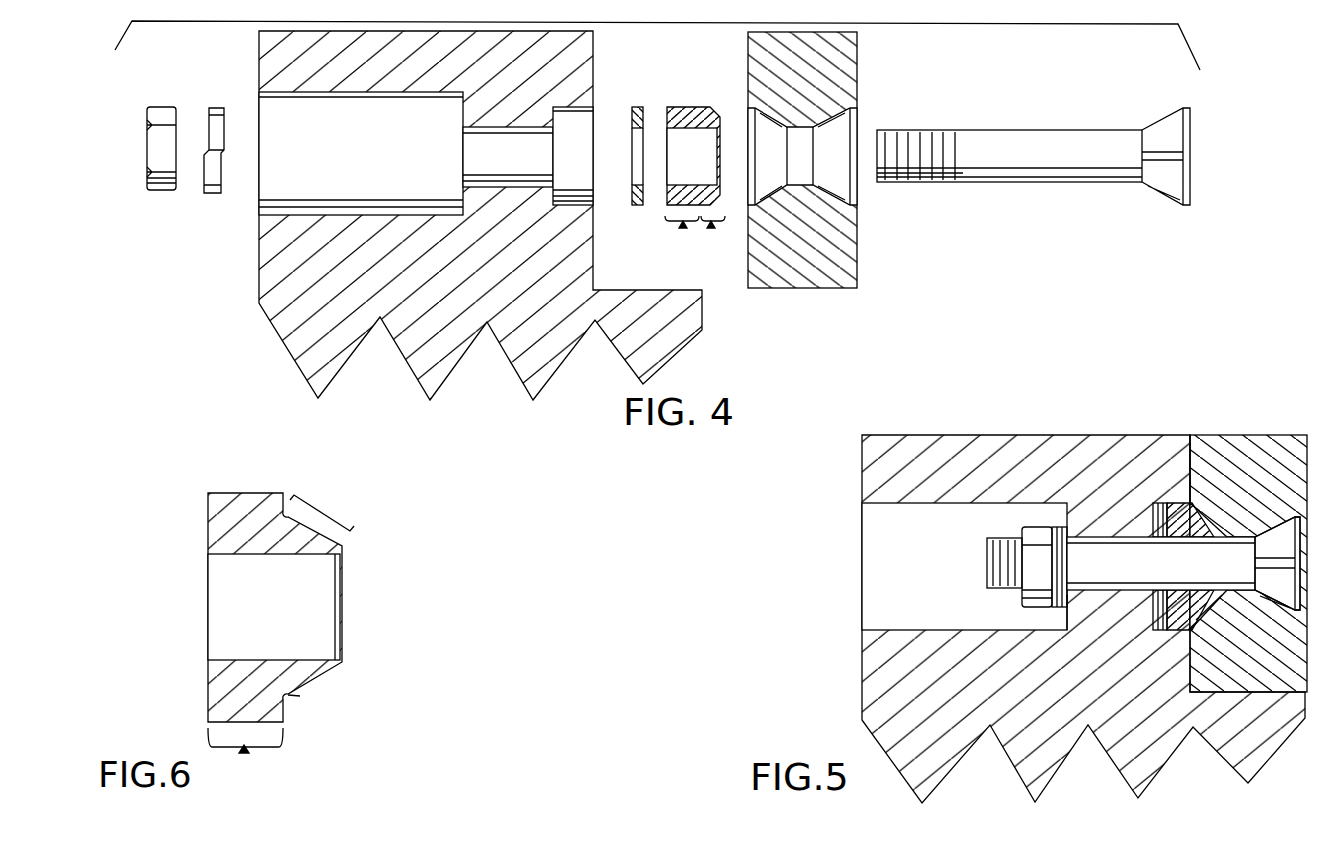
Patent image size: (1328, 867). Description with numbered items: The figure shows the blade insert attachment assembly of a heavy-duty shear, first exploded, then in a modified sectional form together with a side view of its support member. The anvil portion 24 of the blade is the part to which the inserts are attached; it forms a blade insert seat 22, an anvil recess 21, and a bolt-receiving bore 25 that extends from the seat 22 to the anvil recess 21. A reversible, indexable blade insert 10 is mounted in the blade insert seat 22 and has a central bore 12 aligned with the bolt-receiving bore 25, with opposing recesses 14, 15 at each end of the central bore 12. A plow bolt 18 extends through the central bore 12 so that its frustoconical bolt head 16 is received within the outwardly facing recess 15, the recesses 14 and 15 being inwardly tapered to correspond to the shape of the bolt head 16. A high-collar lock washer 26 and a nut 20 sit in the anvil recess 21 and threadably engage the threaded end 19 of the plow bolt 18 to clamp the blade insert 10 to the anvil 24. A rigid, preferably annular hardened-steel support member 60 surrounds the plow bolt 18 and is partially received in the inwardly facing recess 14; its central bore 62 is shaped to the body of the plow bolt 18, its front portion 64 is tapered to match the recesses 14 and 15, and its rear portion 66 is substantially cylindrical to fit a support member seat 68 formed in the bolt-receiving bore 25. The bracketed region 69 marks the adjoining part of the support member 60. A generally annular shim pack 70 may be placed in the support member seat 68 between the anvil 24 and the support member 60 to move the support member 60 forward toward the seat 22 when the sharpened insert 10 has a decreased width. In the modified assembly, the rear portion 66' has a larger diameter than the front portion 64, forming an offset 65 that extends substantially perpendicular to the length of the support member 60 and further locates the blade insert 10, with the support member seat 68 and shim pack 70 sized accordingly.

In FIG. 4, the blade insert 10 is at (840, 68).
In FIG. 5, the blade insert 10 is at (1265, 448).
In FIG. 4, the central bore 12 is at (845, 265).
In FIG. 4, the recess 14 is at (787, 192).
In FIG. 5, the recess 14 is at (1193, 613).
In FIG. 4, the recess 15 is at (803, 178).
In FIG. 5, the recess 15 is at (1272, 605).
In FIG. 4, the bolt head 16 is at (1172, 130).
In FIG. 5, the bolt head 16 is at (1284, 533).
In FIG. 4, the plow bolt 18 is at (1028, 147).
In FIG. 5, the plow bolt 18 is at (1176, 578).
In FIG. 4, the threaded end 19 is at (916, 133).
In FIG. 5, the threaded end 19 is at (990, 552).
In FIG. 4, the nut 20 is at (161, 191).
In FIG. 5, the nut 20 is at (1032, 535).
In FIG. 4, the anvil recess 21 is at (371, 168).
In FIG. 5, the anvil recess 21 is at (933, 603).
In FIG. 5, the blade insert seat 22 is at (1185, 503).
In FIG. 4, the anvil portion 24 is at (462, 283).
In FIG. 5, the anvil portion 24 is at (1131, 714).
In FIG. 4, the bolt-receiving bore 25 is at (521, 168).
In FIG. 5, the bolt-receiving bore 25 is at (1067, 620).
In FIG. 4, the high-collar lock washer 26 is at (214, 193).
In FIG. 5, the high-collar lock washer 26 is at (1058, 527).
In FIG. 4, the support member 60 is at (684, 103).
In FIG. 5, the support member 60 is at (1172, 503).
In FIG. 6, the support member 60 is at (206, 540).
In FIG. 4, the central bore 62 is at (708, 168).
In FIG. 6, the central bore 62 is at (311, 594).
In FIG. 6, the front portion 64 is at (322, 514).
In FIG. 6, the offset 65 is at (288, 708).
In FIG. 4, the rear portion 66 is at (679, 246).
In FIG. 6, the rear portion 66' is at (245, 759).
In FIG. 4, the support member seat 68 is at (568, 108).
In FIG. 4, the tapered portion 69 is at (711, 228).
In FIG. 4, the shim pack 70 is at (637, 207).
In FIG. 5, the shim pack 70 is at (1158, 503).